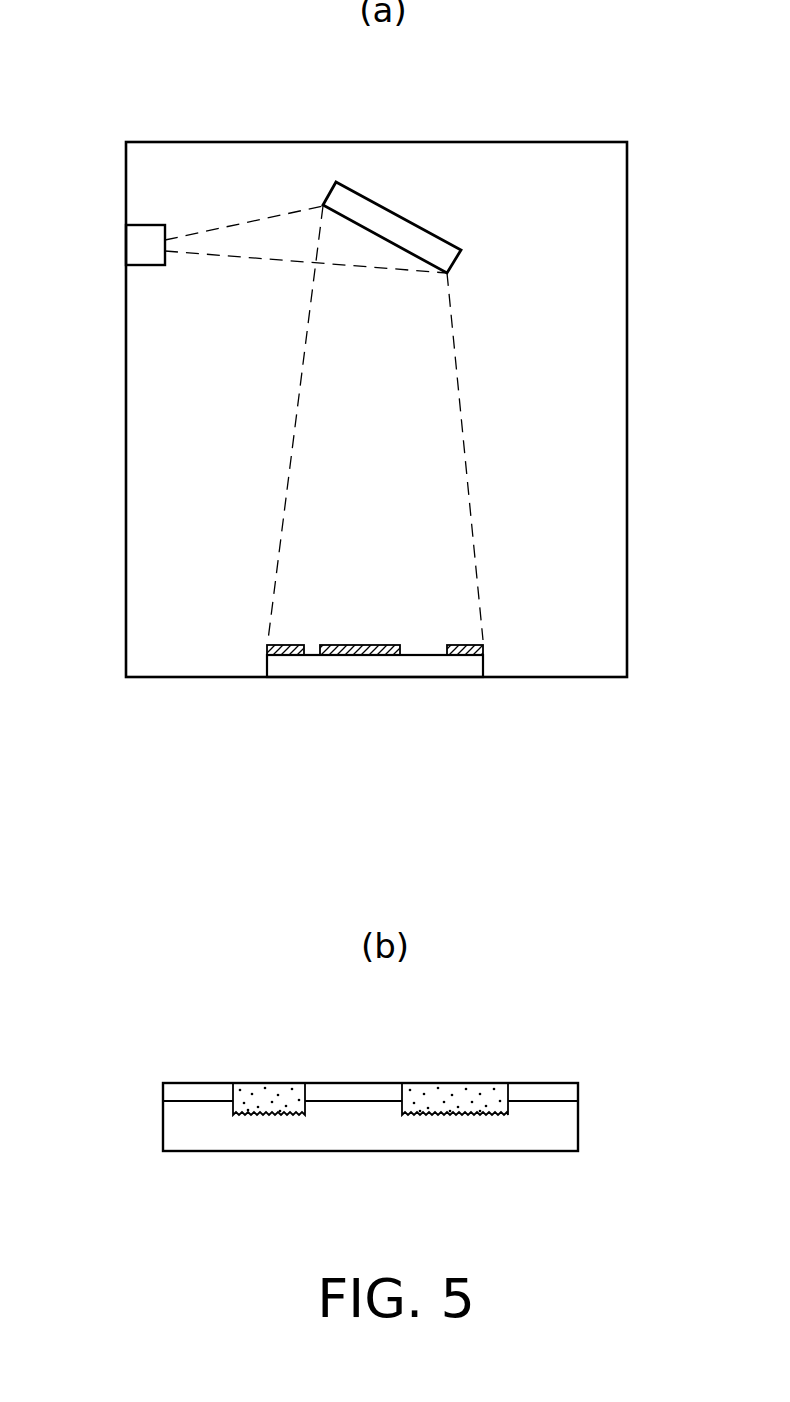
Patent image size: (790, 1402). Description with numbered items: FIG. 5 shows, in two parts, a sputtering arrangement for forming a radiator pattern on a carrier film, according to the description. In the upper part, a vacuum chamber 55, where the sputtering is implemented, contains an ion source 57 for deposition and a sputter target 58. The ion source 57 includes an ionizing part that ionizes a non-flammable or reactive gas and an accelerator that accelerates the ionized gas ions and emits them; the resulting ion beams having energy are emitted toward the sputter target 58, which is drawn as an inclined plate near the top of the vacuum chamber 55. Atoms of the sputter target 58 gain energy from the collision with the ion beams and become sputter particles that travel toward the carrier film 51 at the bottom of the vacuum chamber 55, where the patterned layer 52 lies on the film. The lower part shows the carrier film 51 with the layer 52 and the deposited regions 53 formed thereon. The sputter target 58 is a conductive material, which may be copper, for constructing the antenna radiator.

The substrate 51 is at (427, 668).
The photoresist layer / pattern 52 is at (483, 650).
The etched region 53 is at (472, 1083).
The vacuum chamber 55 is at (627, 381).
The ion source 57 is at (133, 250).
The sputter target 58 is at (385, 215).